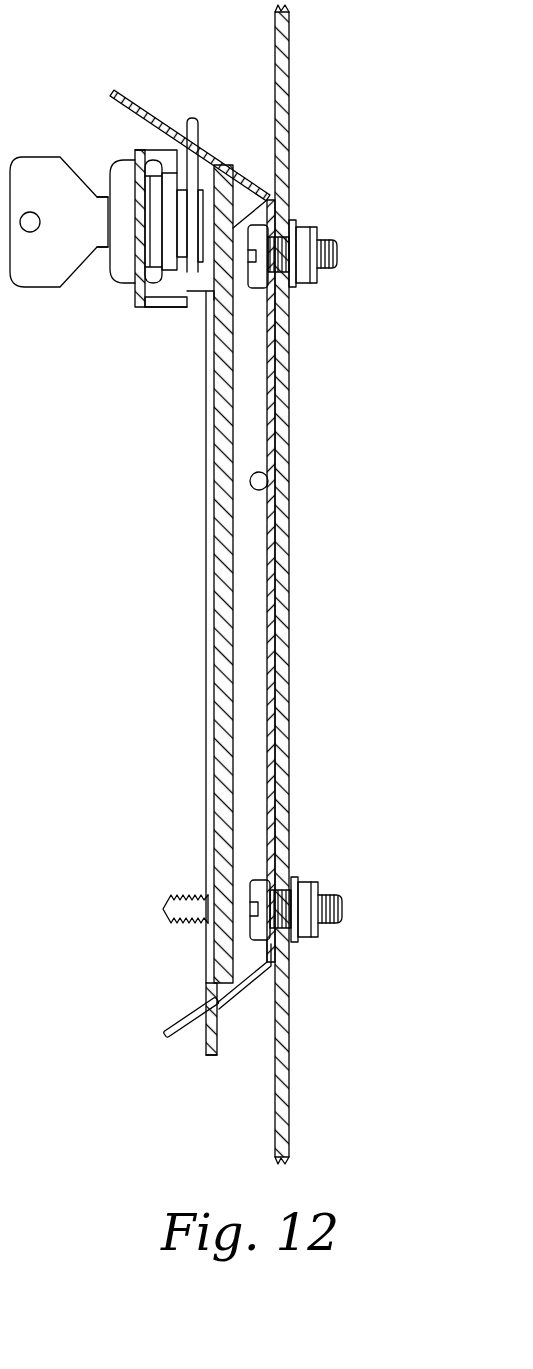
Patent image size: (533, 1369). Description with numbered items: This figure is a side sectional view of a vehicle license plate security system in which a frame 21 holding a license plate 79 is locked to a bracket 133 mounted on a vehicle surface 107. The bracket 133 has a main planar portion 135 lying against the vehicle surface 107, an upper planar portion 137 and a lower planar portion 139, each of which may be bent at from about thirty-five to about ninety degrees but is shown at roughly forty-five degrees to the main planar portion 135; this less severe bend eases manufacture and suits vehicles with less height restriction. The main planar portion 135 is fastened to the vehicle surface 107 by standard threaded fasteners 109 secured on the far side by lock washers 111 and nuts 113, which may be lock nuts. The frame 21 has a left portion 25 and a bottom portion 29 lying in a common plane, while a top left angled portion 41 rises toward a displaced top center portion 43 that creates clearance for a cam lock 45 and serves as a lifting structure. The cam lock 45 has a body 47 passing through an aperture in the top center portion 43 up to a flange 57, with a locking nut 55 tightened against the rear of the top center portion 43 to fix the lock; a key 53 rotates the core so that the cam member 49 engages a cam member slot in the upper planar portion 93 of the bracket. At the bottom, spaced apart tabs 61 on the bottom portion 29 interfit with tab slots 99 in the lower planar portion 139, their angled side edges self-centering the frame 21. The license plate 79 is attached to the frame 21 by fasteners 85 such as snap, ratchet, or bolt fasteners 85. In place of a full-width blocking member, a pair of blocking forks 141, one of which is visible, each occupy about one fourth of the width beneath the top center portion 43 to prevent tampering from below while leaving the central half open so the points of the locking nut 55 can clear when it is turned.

The frame 21 is at (185, 966).
The left portion 25 is at (206, 470).
The bottom portion 29 is at (215, 530).
The top left angled portion 41 is at (228, 168).
The top center portion 43 is at (138, 158).
The cam lock 45 is at (90, 160).
The body 47 is at (167, 298).
The cam member 49 is at (192, 117).
The key 53 is at (38, 290).
The locking nut 55 is at (143, 307).
The flange 57 is at (111, 284).
The tabs 61 is at (218, 1016).
The license plate 79 is at (233, 390).
The fasteners 85 is at (240, 228).
The upper planar portion 93 is at (202, 189).
The tab slots 99 is at (222, 1004).
The vehicle surface 107 is at (289, 40).
The threaded fasteners 109 is at (338, 255).
The lock washers 111 is at (297, 286).
The nuts 113 is at (304, 226).
The bracket 133 is at (258, 782).
The main planar portion 135 is at (267, 488).
The upper planar portion 137 is at (134, 106).
The lower planar portion 139 is at (181, 1033).
The blocking forks 141 is at (164, 308).